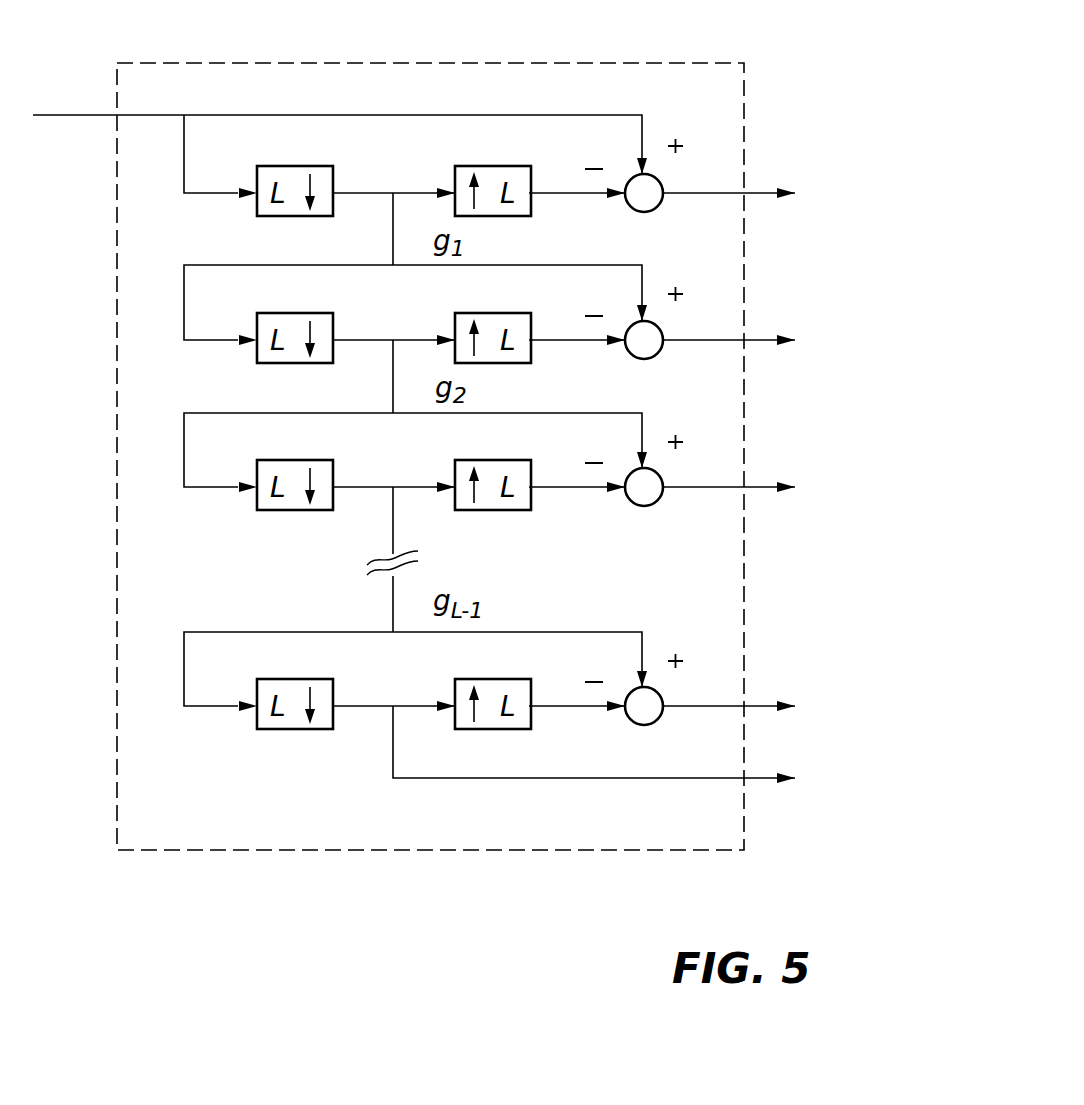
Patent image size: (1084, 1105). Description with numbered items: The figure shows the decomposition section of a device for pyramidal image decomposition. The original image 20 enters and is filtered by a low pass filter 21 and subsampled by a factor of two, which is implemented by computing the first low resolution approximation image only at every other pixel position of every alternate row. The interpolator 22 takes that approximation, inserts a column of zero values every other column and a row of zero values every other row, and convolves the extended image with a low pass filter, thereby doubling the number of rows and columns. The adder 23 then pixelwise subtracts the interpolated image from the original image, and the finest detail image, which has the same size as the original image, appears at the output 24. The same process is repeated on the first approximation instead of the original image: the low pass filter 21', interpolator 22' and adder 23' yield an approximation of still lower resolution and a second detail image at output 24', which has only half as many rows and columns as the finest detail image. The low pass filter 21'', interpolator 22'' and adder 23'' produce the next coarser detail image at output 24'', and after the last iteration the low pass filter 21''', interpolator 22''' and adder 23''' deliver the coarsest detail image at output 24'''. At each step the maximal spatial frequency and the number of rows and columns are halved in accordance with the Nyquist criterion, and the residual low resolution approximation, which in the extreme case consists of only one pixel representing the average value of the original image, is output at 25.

The original image 20 is at (85, 114).
The low pass filter 21 is at (287, 213).
The low pass filter 21' is at (291, 360).
The low pass filter 21'' is at (295, 513).
The low pass filter 21''' is at (303, 727).
The interpolator 22 is at (445, 213).
The interpolator 22' is at (447, 360).
The interpolator 22'' is at (449, 513).
The interpolator 22''' is at (453, 727).
The adder 23 is at (607, 200).
The adder 23' is at (611, 347).
The adder 23'' is at (615, 501).
The adder 23''' is at (618, 714).
The detail image output 24 is at (761, 167).
The detail image output 24' is at (760, 320).
The detail image output 24'' is at (760, 474).
The detail image output 24''' is at (770, 686).
The residual image output 25 is at (756, 778).